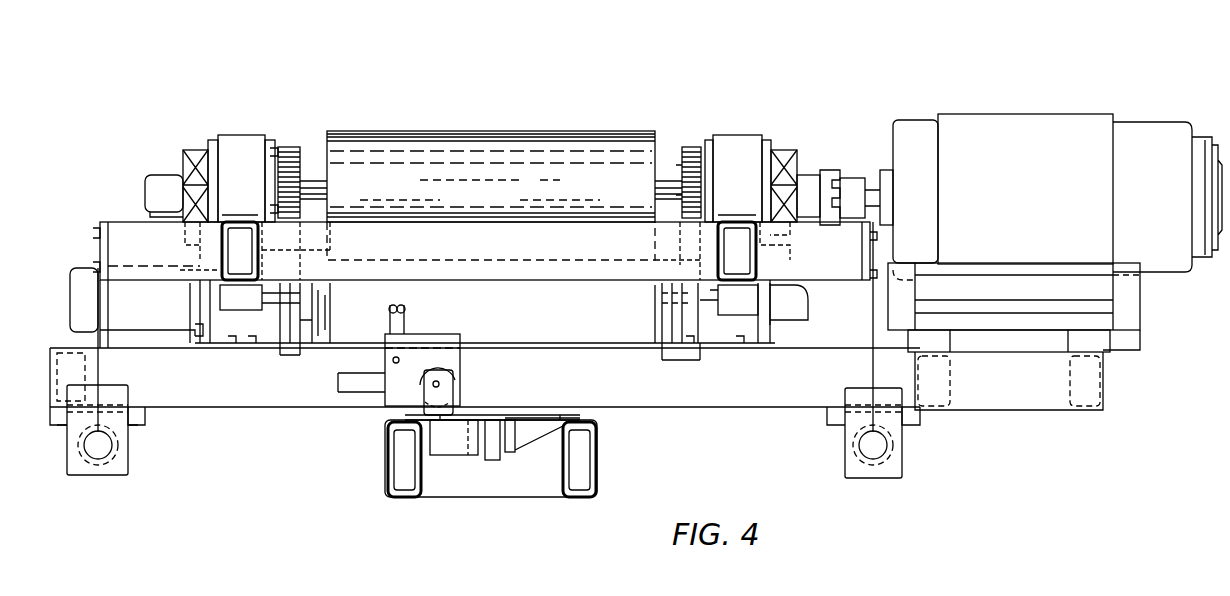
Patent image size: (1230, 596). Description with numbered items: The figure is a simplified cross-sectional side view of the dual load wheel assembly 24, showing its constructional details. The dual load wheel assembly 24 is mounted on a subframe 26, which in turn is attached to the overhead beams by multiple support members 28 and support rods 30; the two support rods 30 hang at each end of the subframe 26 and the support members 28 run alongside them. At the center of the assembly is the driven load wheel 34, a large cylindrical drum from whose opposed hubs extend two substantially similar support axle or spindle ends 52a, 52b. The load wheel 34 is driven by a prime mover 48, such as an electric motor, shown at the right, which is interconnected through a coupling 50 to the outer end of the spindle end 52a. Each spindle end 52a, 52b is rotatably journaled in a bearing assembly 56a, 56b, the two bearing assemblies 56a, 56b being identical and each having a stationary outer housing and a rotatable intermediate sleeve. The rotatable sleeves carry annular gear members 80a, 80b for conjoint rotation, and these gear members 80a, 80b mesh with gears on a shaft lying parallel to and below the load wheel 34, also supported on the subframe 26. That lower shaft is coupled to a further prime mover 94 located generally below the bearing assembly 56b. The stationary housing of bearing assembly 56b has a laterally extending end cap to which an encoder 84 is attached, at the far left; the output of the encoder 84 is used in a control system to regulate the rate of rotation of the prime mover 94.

The dual load wheel assembly 24 is at (592, 118).
The subframe 26 is at (683, 411).
The support member 28 is at (98, 306).
The support rod 30 is at (101, 458).
The driven load wheel 34 is at (440, 162).
The prime mover 48 is at (1078, 150).
The coupling 50 is at (830, 176).
The spindle end 52a is at (660, 195).
The spindle end 52b is at (340, 195).
The bearing assembly 56a is at (742, 148).
The bearing assembly 56b is at (241, 162).
The annular gear member 80a is at (692, 148).
The annular gear member 80b is at (290, 160).
The encoder 84 is at (160, 190).
The prime mover 94 is at (86, 272).